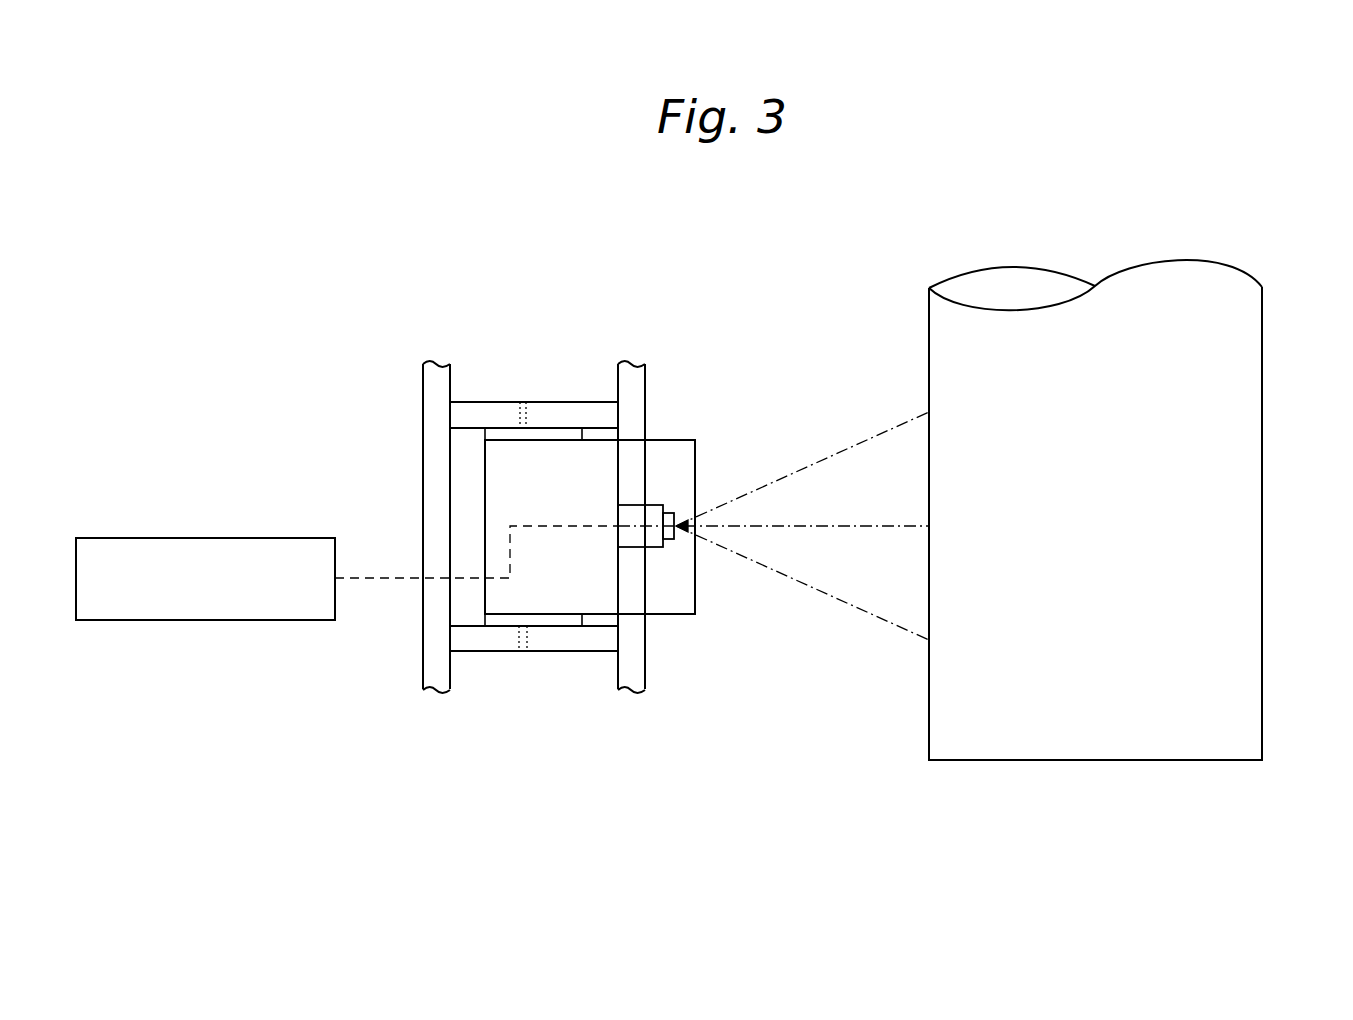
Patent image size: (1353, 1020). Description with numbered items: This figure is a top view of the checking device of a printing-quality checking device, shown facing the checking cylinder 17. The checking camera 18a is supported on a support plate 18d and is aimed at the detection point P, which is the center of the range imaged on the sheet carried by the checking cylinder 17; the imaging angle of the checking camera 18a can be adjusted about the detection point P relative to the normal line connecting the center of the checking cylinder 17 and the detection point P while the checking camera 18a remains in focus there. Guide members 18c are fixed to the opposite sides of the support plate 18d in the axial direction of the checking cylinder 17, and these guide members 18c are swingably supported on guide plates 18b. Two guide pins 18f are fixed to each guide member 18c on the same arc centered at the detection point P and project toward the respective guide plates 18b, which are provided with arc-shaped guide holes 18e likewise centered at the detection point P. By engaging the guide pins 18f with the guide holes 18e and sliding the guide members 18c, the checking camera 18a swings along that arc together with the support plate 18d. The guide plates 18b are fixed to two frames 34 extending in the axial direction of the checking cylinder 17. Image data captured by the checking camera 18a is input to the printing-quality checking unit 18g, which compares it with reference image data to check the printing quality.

The checking cylinder 17 is at (1230, 613).
The checking camera 18a is at (647, 547).
The guide plate 18b is at (478, 415).
The guide member 18c is at (563, 433).
The support plate 18d is at (527, 603).
The guide hole 18e is at (537, 400).
The guide pin 18f is at (522, 402).
The printing-quality checking unit 18g is at (205, 538).
The frame 34 is at (630, 412).
The detection point P is at (929, 526).